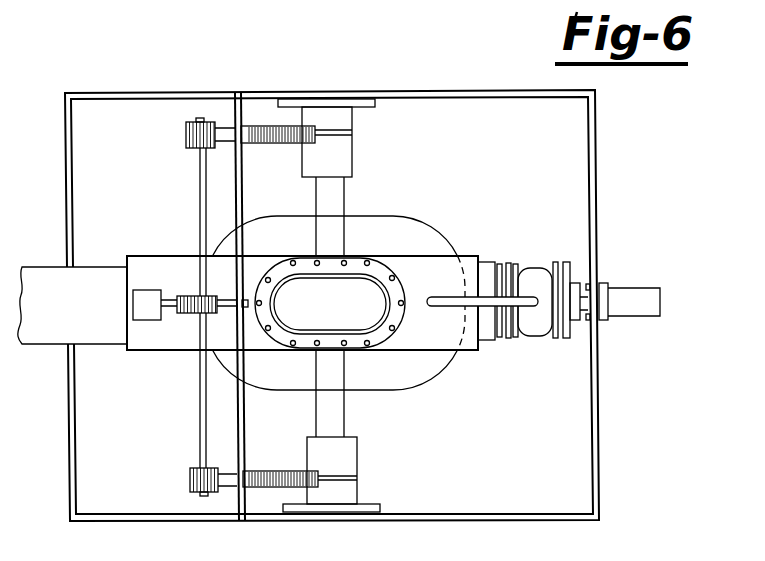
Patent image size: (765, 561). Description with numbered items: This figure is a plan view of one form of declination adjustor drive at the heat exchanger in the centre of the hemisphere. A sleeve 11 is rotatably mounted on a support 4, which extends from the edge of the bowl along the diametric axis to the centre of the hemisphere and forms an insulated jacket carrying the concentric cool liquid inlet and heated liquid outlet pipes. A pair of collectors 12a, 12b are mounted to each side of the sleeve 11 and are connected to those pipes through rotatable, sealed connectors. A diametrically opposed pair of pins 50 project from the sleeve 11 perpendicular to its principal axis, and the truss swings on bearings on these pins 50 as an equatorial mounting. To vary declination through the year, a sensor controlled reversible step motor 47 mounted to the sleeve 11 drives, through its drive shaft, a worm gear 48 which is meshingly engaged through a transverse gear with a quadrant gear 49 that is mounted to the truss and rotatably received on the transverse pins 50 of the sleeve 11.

The support 4 is at (50, 335).
The sleeve 11 is at (140, 343).
The collector 12a is at (390, 297).
The collector 12b is at (415, 370).
The sensor controlled reversible step motor 47 is at (140, 302).
The worm gear 48 is at (196, 291).
The quadrant gear 49 is at (247, 127).
The pins 50 is at (330, 204).